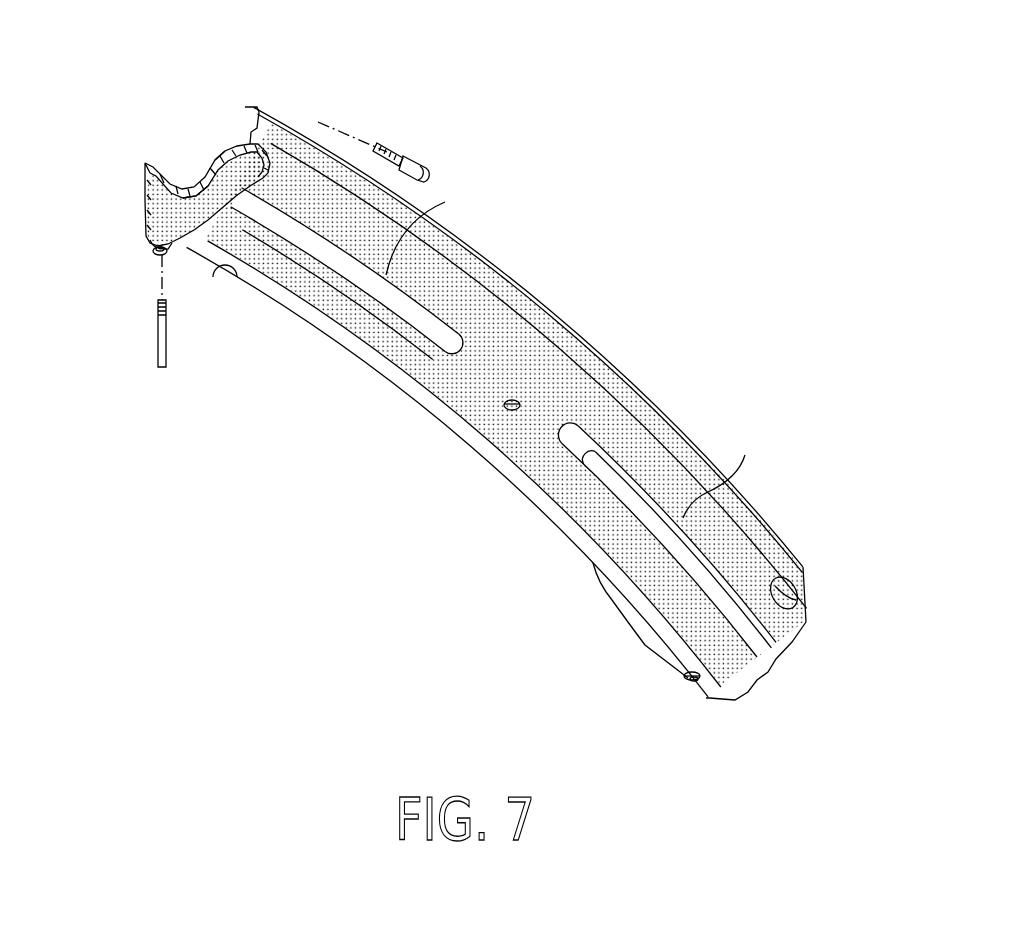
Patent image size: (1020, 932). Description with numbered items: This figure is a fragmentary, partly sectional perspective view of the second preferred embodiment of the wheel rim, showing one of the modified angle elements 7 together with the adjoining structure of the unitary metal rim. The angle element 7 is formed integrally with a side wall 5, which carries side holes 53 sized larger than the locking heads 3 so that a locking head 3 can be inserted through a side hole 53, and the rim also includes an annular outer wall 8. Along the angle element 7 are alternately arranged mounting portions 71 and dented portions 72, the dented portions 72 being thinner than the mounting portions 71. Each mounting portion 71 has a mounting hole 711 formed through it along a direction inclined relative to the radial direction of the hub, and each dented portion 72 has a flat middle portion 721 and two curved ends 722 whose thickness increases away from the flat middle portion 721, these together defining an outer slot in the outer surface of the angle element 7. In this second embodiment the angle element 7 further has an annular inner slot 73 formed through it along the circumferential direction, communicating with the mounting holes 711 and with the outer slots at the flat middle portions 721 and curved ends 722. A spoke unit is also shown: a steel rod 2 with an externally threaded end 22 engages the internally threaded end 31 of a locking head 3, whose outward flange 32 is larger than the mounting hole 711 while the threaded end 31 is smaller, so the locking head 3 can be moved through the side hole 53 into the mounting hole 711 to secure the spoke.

The angle element 7 is at (390, 394).
The dented portion 72 is at (420, 466).
The flat middle portion 721 is at (400, 285).
The curved end 722 is at (237, 287).
The mounting portion 71 is at (165, 256).
The mounting hole 711 is at (157, 250).
The side hole 53 is at (310, 127).
The side wall 5 is at (267, 150).
The inner slot 73 is at (207, 183).
The outer wall 8 is at (220, 152).
The locking head 3 is at (461, 117).
The internally threaded end 31 is at (388, 146).
The outward flange 32 is at (430, 166).
The steel rod 2 is at (109, 329).
The externally threaded end 22 is at (150, 307).